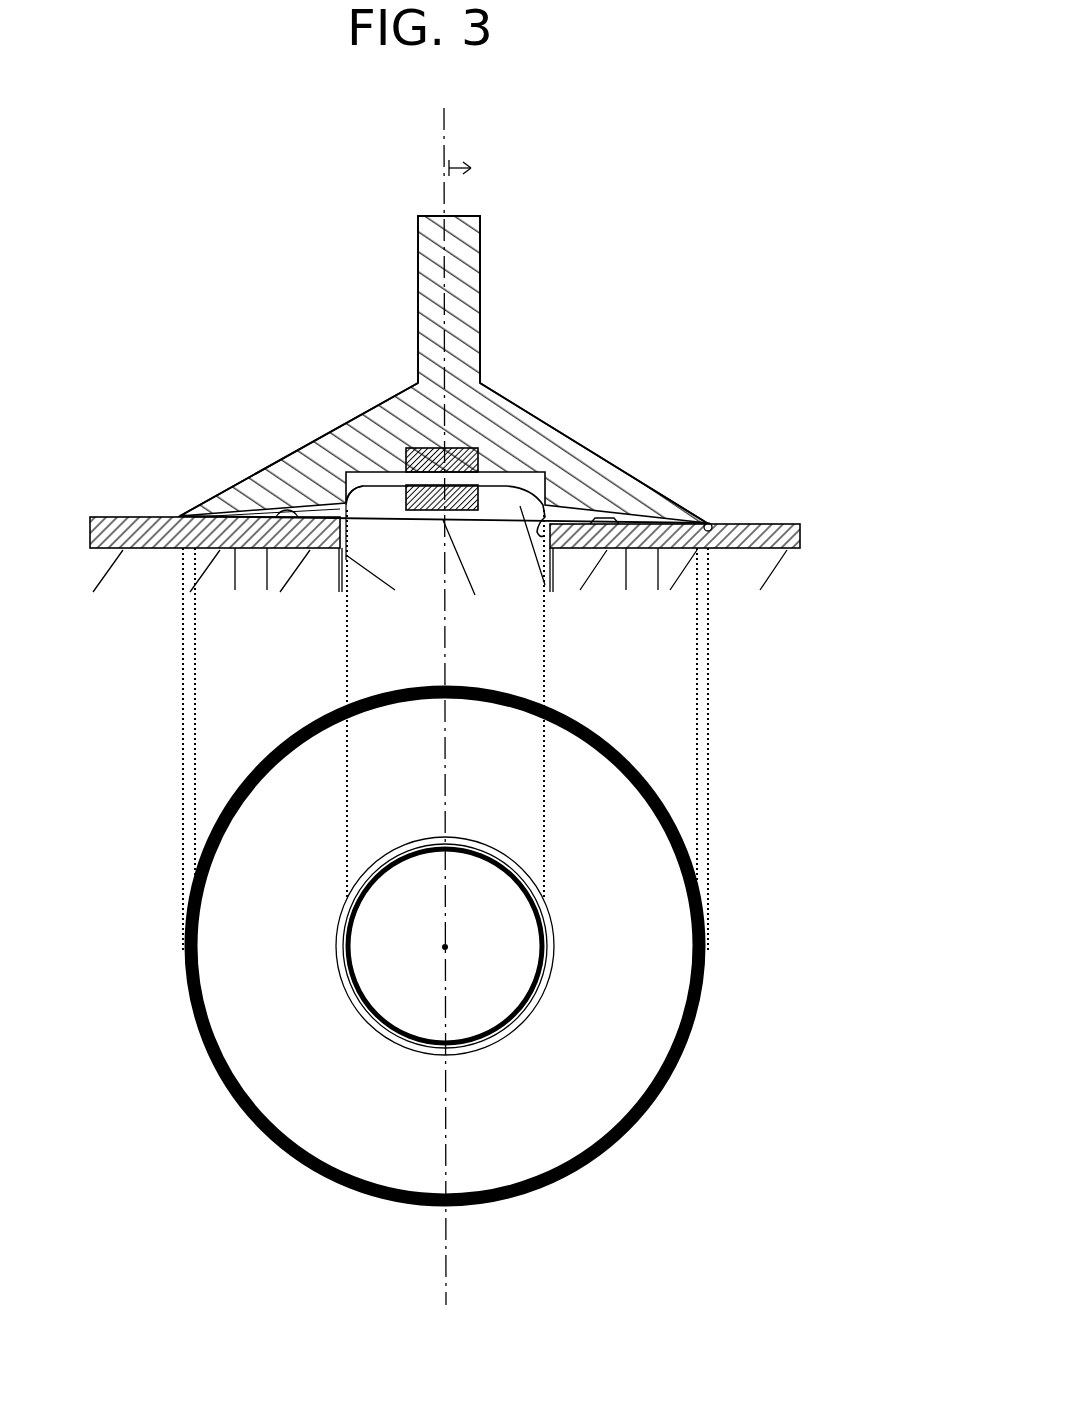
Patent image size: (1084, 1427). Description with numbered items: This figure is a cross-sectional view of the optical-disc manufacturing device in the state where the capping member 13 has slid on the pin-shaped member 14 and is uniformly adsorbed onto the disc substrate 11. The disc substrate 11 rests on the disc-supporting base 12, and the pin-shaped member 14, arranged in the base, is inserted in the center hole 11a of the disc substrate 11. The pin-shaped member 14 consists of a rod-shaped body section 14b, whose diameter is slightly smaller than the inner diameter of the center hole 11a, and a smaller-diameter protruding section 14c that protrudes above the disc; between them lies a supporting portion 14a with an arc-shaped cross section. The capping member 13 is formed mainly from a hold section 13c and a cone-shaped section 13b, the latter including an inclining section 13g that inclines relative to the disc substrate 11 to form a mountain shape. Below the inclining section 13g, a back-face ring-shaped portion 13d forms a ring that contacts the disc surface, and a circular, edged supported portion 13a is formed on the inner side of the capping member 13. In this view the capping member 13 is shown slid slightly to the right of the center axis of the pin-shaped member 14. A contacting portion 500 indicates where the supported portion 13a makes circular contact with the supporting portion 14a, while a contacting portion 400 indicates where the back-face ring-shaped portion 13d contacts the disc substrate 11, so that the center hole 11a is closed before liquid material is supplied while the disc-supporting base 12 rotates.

The disc substrate 11 is at (800, 530).
The center hole 11a is at (560, 510).
The disc-supporting base 12 is at (782, 577).
The capping member 13 is at (309, 273).
The supported portion 13a is at (548, 510).
The cone-shaped section 13b is at (400, 408).
The hold section 13c is at (417, 297).
The back-face ring-shaped portion 13d is at (710, 522).
The inclining section 13g is at (548, 424).
The pin-shaped member 14 is at (480, 607).
The supporting portion 14a is at (342, 492).
The rod-shaped body section 14b is at (395, 582).
The protruding section 14c is at (345, 490).
The contacting portion 400 is at (708, 1000).
The contacting portion 500 is at (338, 962).